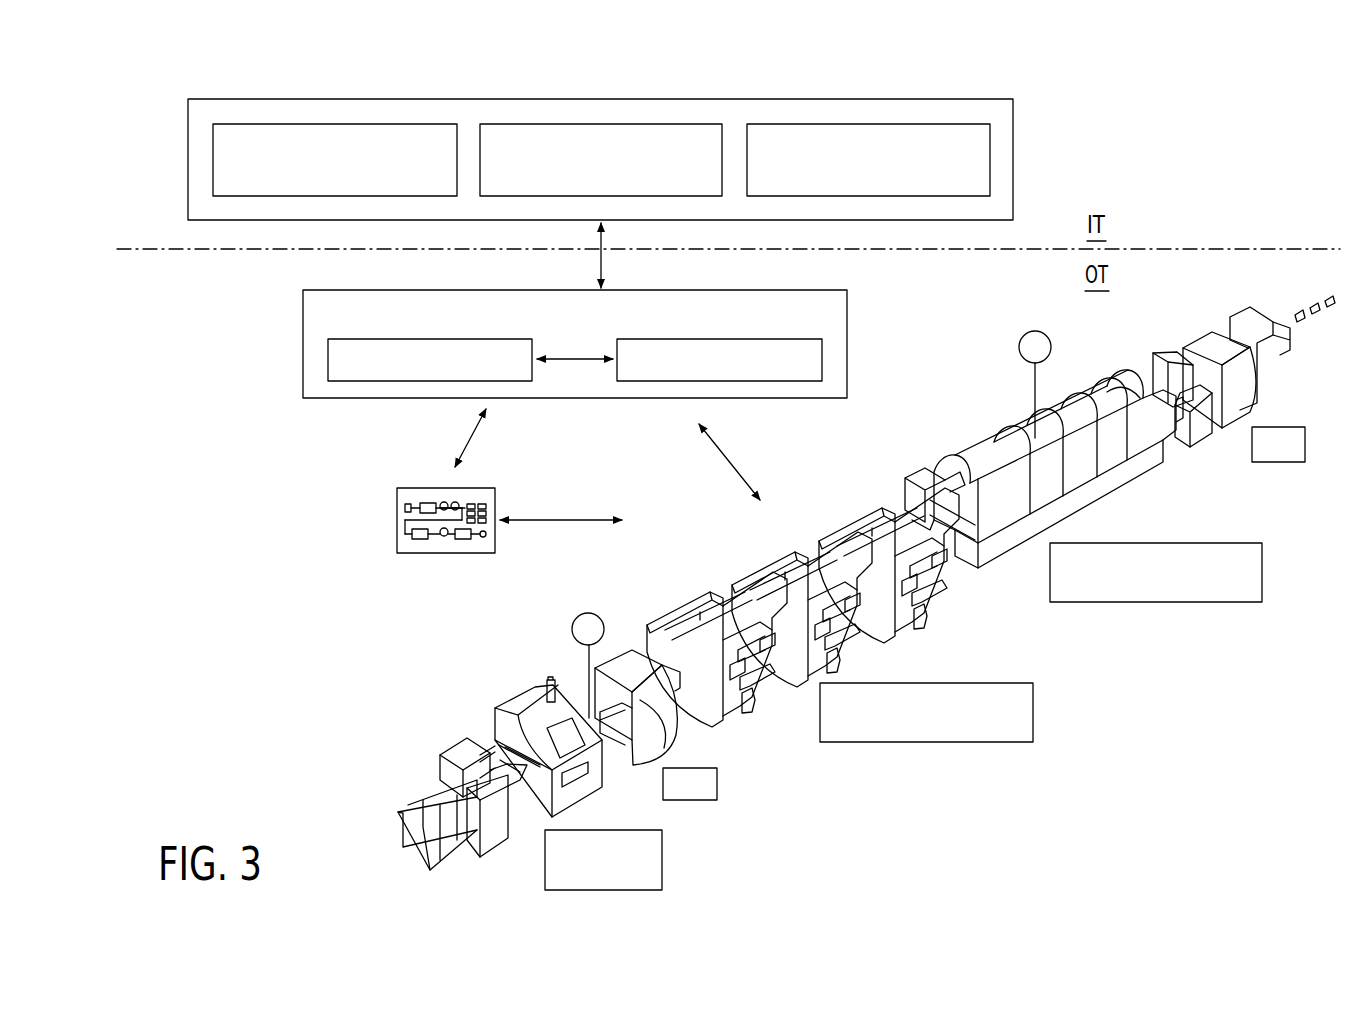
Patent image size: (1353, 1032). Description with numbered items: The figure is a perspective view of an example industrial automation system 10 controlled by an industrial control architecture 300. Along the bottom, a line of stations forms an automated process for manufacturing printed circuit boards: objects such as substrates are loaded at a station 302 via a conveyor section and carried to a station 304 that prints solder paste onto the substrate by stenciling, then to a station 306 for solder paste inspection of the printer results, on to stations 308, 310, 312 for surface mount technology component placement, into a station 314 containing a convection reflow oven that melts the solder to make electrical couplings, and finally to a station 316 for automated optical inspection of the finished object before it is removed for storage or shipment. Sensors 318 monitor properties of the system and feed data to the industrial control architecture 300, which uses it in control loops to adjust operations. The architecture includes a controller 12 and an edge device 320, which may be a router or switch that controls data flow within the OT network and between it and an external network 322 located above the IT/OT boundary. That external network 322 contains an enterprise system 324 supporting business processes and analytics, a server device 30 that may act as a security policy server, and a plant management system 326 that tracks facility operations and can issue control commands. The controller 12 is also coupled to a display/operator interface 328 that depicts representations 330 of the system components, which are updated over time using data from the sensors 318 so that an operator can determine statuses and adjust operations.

The industrial automation system 10 is at (1200, 136).
The controller 12 is at (788, 339).
The server device 30 is at (662, 123).
The industrial control architecture 300 is at (848, 345).
The station 302 is at (453, 745).
The station 304 is at (522, 696).
The station 306 is at (620, 650).
The station 308 is at (678, 610).
The station 310 is at (758, 562).
The station 312 is at (856, 516).
The station 314 is at (996, 458).
The station 316 is at (1195, 338).
The sensors 318 is at (572, 634).
The edge device 320 is at (375, 339).
The external network 322 is at (394, 98).
The enterprise system 324 is at (213, 159).
The plant management system 326 is at (992, 164).
The display/operator interface 328 is at (397, 543).
The representations 330 is at (470, 502).